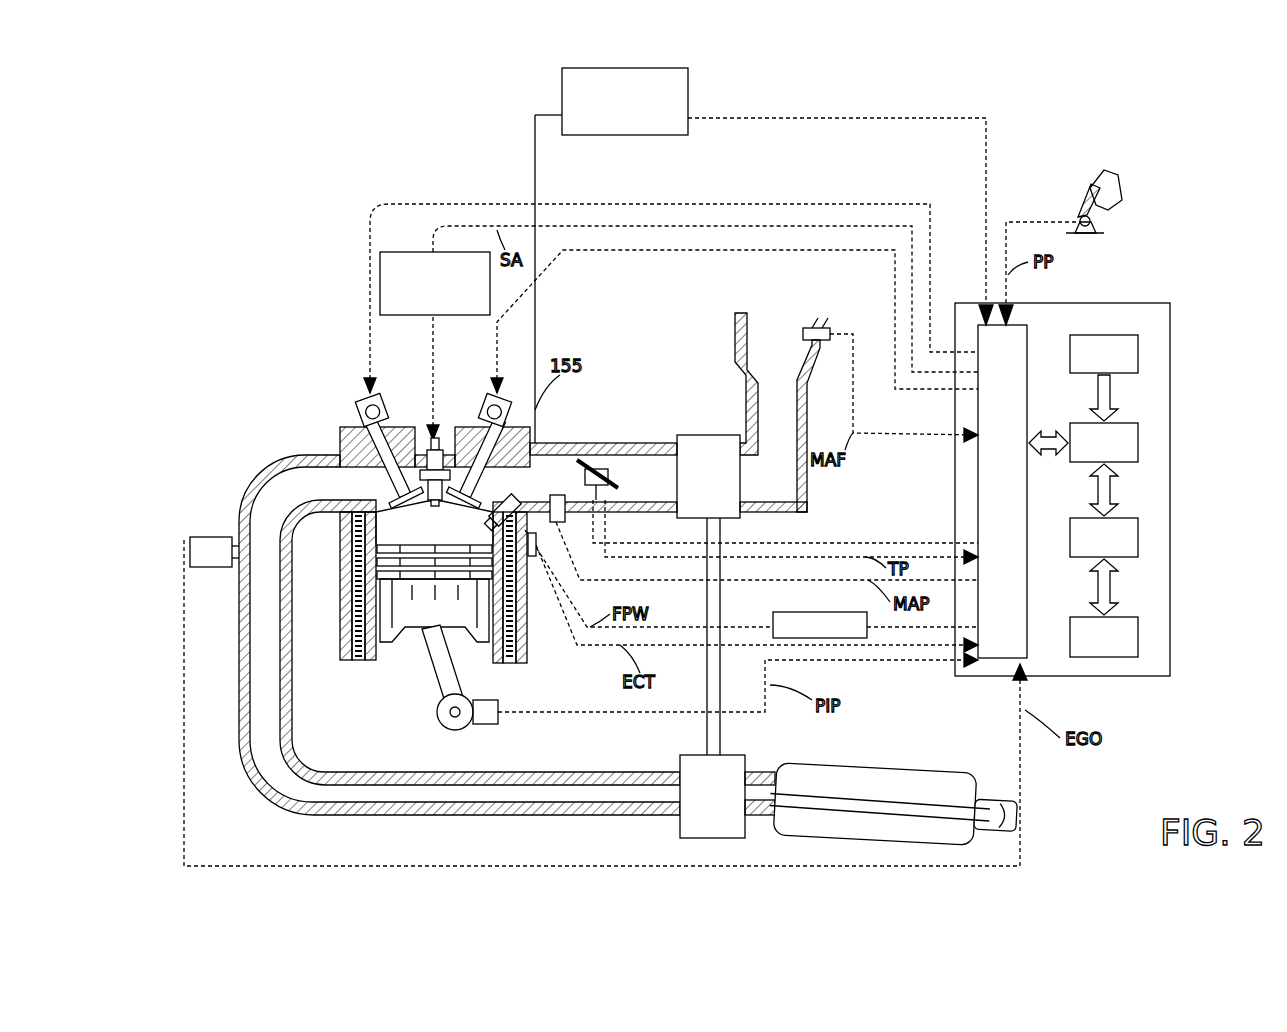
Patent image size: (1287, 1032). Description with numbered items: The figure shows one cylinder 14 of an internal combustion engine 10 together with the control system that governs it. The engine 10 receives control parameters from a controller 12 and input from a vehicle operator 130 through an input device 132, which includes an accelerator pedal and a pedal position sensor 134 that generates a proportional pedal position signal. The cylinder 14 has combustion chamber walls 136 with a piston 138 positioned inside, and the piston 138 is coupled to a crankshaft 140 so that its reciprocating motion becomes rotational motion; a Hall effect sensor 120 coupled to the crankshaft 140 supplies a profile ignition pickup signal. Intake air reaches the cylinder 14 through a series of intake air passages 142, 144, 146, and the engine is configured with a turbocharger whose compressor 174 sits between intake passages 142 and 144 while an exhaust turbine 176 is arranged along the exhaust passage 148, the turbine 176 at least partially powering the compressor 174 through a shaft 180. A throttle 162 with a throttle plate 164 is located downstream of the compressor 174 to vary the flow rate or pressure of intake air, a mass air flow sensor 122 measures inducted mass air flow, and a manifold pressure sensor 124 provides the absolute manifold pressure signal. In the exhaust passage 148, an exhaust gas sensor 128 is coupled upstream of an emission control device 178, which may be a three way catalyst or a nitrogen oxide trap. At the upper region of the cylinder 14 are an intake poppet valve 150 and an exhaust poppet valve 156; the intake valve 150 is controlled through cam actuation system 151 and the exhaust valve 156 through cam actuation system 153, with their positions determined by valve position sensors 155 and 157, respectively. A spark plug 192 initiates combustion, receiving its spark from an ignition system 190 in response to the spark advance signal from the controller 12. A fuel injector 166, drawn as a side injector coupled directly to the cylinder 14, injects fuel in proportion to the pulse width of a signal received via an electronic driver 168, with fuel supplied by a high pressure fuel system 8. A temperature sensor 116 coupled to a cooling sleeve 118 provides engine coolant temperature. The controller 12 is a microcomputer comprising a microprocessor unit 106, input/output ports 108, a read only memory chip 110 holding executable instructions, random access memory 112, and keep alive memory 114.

The internal combustion engine 10 is at (180, 148).
The high pressure fuel system 8 is at (688, 84).
The ignition system 190 is at (400, 252).
The controller 12 is at (1172, 306).
The input/output ports 108 is at (1030, 330).
The read only memory chip 110 is at (1140, 345).
The microprocessor unit 106 is at (1140, 435).
The random access memory 112 is at (1140, 532).
The keep alive memory 114 is at (1140, 630).
The vehicle operator 130 is at (1125, 180).
The input device 132 is at (1080, 210).
The pedal position sensor 134 is at (1100, 222).
The mass air flow sensor 122 is at (822, 327).
The intake air passage 142 is at (777, 412).
The compressor 174 is at (688, 435).
The intake air passage 144 is at (603, 464).
The intake air passage 146 is at (650, 489).
The throttle 162 is at (598, 468).
The throttle plate 164 is at (576, 460).
The manifold pressure sensor 124 is at (565, 524).
The exhaust passage 148 is at (459, 635).
The exhaust gas sensor 128 is at (190, 545).
The exhaust poppet valve 156 is at (340, 445).
The intake poppet valve 150 is at (450, 440).
The cam actuation system 153 is at (380, 405).
The valve position sensor 157 is at (358, 415).
The cam actuation system 151 is at (487, 405).
The valve position sensor 155 is at (494, 409).
The spark plug 192 is at (425, 440).
The fuel injector 166 is at (502, 506).
The combustion chamber walls 136 is at (360, 662).
The cooling sleeve 118 is at (524, 640).
The temperature sensor 116 is at (535, 560).
The cylinder 14 is at (370, 525).
The piston 138 is at (418, 640).
The crankshaft 140 is at (445, 722).
The Hall effect sensor 120 is at (480, 724).
The shaft 180 is at (722, 722).
The exhaust turbine 176 is at (680, 828).
The emission control device 178 is at (940, 775).
The electronic driver 168 is at (775, 614).